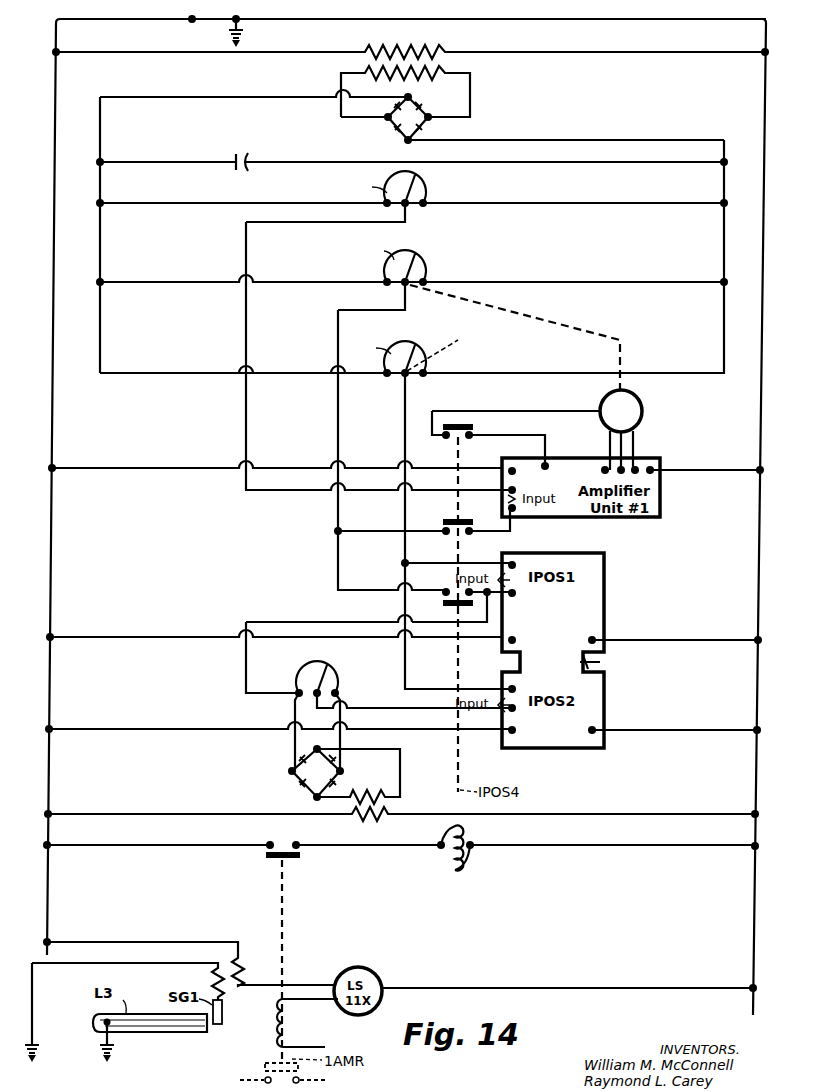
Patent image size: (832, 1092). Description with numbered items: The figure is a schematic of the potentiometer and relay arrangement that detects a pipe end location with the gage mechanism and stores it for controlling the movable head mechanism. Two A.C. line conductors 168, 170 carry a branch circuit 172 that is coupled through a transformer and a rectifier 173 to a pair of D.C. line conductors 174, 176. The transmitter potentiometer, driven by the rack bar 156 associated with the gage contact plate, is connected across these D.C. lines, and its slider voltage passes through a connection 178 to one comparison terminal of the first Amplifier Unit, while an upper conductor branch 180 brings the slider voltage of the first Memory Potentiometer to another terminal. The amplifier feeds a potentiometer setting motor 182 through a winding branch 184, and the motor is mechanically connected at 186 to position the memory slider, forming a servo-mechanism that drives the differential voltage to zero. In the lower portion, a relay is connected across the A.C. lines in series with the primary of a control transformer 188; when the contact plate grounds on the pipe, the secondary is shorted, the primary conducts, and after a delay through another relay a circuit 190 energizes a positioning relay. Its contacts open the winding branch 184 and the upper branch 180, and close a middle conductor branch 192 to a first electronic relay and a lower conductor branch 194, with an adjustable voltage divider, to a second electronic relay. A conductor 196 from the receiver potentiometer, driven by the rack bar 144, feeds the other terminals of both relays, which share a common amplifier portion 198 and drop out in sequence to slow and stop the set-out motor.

The A.C. line conductor 168 is at (56, 32).
The A.C. line conductor 170 is at (766, 42).
The branch circuit 172 is at (195, 54).
The rectifier 173 is at (470, 97).
The D.C. line conductor 174 is at (100, 130).
The D.C. line conductor 176 is at (724, 190).
The rack bar 156 is at (425, 202).
The mechanical connection 186 is at (487, 314).
The rack bar 144 is at (447, 351).
The winding branch 184 is at (557, 412).
The potentiometer setting motor 182 is at (642, 411).
The connection 178 is at (246, 413).
The upper conductor branch 180 is at (390, 531).
The conductor 196 is at (405, 548).
The middle conductor branch 192 is at (500, 602).
The common amplifier portion 198 is at (588, 662).
The lower conductor branch 194 is at (276, 693).
The circuit 190 is at (419, 846).
The control transformer 188 is at (233, 989).